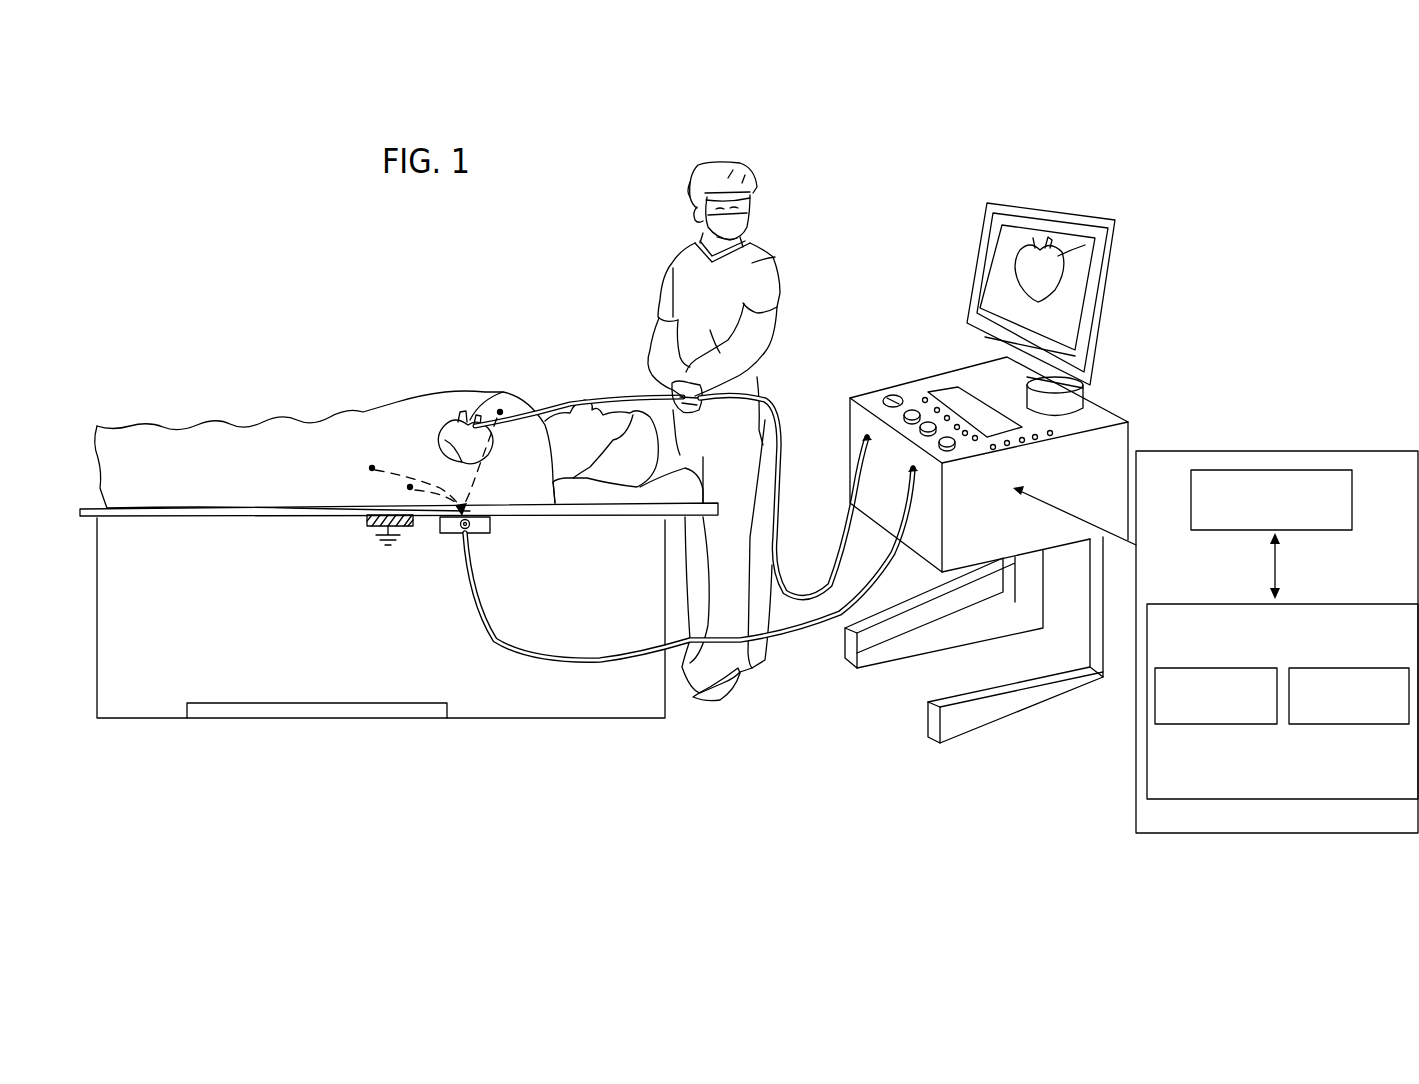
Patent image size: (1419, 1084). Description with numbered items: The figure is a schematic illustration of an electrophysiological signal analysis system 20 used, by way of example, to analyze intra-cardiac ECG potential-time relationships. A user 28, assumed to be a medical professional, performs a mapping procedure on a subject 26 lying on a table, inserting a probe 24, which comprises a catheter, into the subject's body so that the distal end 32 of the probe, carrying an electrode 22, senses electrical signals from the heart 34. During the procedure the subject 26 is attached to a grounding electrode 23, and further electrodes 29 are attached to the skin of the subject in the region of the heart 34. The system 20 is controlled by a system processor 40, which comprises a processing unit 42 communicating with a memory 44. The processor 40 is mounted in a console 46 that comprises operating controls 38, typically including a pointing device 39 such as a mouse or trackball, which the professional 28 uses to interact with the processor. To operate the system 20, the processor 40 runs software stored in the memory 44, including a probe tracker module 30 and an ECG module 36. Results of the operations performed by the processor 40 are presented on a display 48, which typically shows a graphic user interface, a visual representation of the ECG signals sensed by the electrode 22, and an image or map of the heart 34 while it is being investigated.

The electrophysiological signal analysis system 20 is at (979, 419).
The electrode 22 is at (399, 406).
The grounding electrode 23 is at (367, 524).
The probe 24 is at (780, 427).
The subject 26 is at (636, 467).
The user 28 is at (683, 293).
The electrodes 29 is at (410, 485).
The probe tracker module 30 is at (1155, 715).
The distal end 32 is at (453, 420).
The heart 34 is at (505, 405).
The ECG module 36 is at (1363, 724).
The operating controls 38 is at (979, 473).
The pointing device 39 is at (892, 398).
The system processor 40 is at (1215, 649).
The processing unit 42 is at (1208, 470).
The memory 44 is at (1225, 729).
The console 46 is at (941, 380).
The display 48 is at (1023, 203).